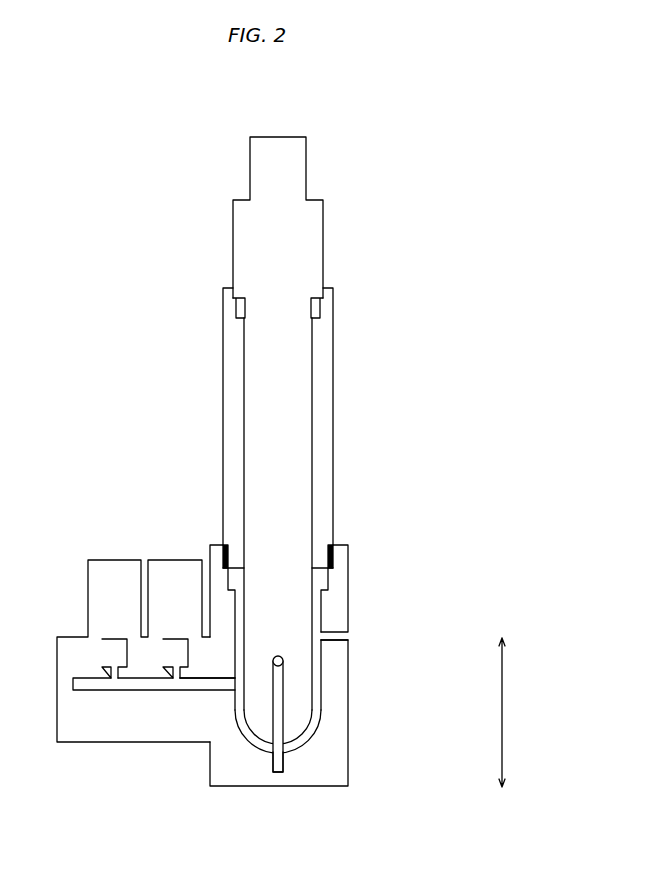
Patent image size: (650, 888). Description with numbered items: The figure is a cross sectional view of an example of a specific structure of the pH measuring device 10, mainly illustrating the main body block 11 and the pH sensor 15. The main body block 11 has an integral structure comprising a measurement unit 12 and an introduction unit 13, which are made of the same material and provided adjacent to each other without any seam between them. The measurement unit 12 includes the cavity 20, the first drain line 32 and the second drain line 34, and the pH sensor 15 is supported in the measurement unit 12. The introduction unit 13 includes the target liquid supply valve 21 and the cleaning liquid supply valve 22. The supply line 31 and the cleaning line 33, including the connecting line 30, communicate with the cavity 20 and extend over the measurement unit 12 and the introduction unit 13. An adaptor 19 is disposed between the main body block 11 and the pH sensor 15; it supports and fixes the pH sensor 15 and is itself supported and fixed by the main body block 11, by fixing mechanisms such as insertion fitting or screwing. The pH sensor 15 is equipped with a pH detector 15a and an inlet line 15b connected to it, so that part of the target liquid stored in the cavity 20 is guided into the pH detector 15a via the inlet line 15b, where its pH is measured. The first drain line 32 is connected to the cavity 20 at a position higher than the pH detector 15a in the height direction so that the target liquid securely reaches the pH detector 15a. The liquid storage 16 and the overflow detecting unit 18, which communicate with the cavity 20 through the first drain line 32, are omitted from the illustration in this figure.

The pH measuring device 10 is at (389, 159).
The main body block 11 is at (70, 626).
The measurement unit 12 is at (348, 815).
The introduction unit 13 is at (210, 815).
The pH sensor 15 is at (277, 153).
The pH detector 15a is at (277, 653).
The inlet line 15b is at (283, 690).
The liquid storage 16 is at (406, 635).
The overflow detecting unit 18 is at (353, 637).
The adaptor 19 is at (322, 429).
The cavity 20 is at (316, 717).
The target liquid supply valve 21 is at (176, 628).
The cleaning liquid supply valve 22 is at (116, 628).
The connecting line 30 is at (185, 690).
The supply line 31 is at (203, 683).
The first drain line 32 is at (333, 637).
The cleaning line 33 is at (135, 692).
The second drain line 34 is at (283, 765).